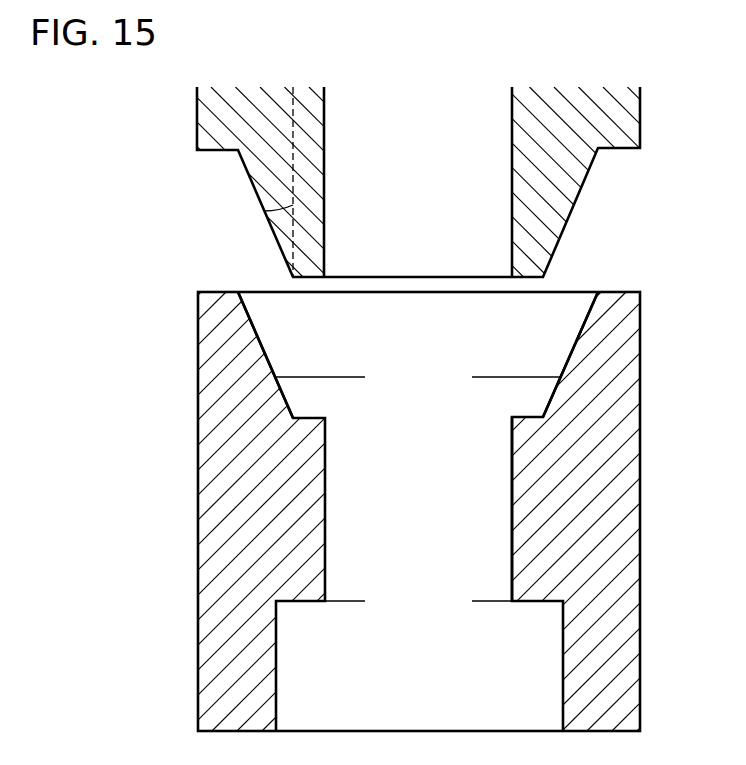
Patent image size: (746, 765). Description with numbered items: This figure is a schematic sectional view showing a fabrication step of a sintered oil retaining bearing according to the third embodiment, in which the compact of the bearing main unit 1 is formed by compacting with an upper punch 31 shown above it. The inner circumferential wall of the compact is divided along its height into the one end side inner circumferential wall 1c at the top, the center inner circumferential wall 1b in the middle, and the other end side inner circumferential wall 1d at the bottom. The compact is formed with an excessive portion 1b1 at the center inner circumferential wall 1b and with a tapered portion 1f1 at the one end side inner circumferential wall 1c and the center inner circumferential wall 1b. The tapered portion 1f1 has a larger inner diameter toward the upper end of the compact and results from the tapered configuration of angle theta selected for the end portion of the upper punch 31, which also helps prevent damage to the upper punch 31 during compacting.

The upper punch 31 is at (618, 117).
The bearing main unit 1 is at (622, 540).
The tapered portion 1f1 is at (252, 326).
The excessive portion 1b1 is at (512, 442).
The one end side inner circumferential wall 1c is at (353, 292).
The center inner circumferential wall 1b is at (353, 377).
The other end side inner circumferential wall 1d is at (353, 601).